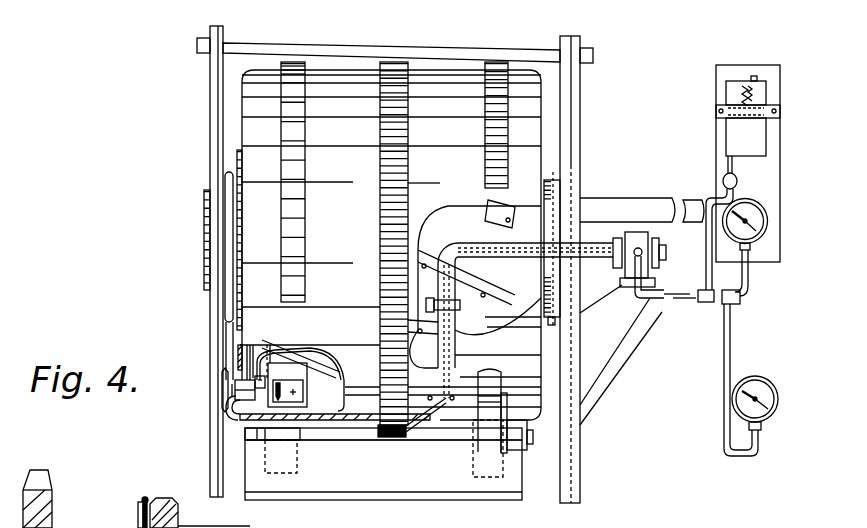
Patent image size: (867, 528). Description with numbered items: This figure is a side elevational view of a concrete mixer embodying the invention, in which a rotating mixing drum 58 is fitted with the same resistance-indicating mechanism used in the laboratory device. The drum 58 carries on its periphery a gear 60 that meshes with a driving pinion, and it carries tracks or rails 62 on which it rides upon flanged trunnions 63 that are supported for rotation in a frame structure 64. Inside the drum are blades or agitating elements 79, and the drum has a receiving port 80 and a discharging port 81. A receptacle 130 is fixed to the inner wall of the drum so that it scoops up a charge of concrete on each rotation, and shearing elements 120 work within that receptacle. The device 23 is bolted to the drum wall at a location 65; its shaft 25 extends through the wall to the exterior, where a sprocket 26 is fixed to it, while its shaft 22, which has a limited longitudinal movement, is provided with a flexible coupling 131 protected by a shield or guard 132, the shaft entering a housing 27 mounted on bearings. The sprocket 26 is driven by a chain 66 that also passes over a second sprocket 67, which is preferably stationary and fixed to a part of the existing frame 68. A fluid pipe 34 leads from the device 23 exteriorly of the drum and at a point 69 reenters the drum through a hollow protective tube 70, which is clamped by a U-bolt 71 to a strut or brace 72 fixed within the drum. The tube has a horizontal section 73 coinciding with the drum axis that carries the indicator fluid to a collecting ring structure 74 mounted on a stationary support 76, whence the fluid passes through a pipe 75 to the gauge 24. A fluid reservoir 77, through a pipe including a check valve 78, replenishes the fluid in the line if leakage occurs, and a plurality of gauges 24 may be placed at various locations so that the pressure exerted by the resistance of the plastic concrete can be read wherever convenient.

The shaft 22 is at (286, 382).
The device 23 is at (232, 408).
The gauge 24 is at (760, 246).
The shaft 25 is at (234, 387).
The sprocket 26 is at (228, 398).
The housing 27 is at (253, 352).
The gauge pipe 34 is at (238, 422).
The mixing drum 58 is at (248, 122).
The gear 60 is at (406, 135).
The tracks or rails 62 is at (302, 64).
The flanged trunnions 63 is at (290, 470).
The frame structure 64 is at (398, 486).
The location 65 is at (235, 374).
The chain 66 is at (238, 350).
The second sprocket 67 is at (226, 305).
The frame 68 is at (210, 155).
The point 69 is at (445, 432).
The hollow protective tube 70 is at (470, 357).
The U-bolt 71 is at (462, 303).
The strut or brace 72 is at (388, 306).
The horizontal section 73 is at (476, 241).
The collecting ring structure 74 is at (636, 231).
The pipe 75 is at (684, 300).
The stationary support 76 is at (618, 300).
The fluid reservoir 77 is at (727, 128).
The check valve 78 is at (722, 180).
The blades or agitating elements 79 is at (504, 214).
The receiving port 80 is at (574, 190).
The discharging port 81 is at (204, 200).
The shearing elements 120 is at (306, 370).
The receptacle 130 is at (338, 372).
The flexible coupling 131 is at (252, 345).
The shield or guard 132 is at (270, 345).